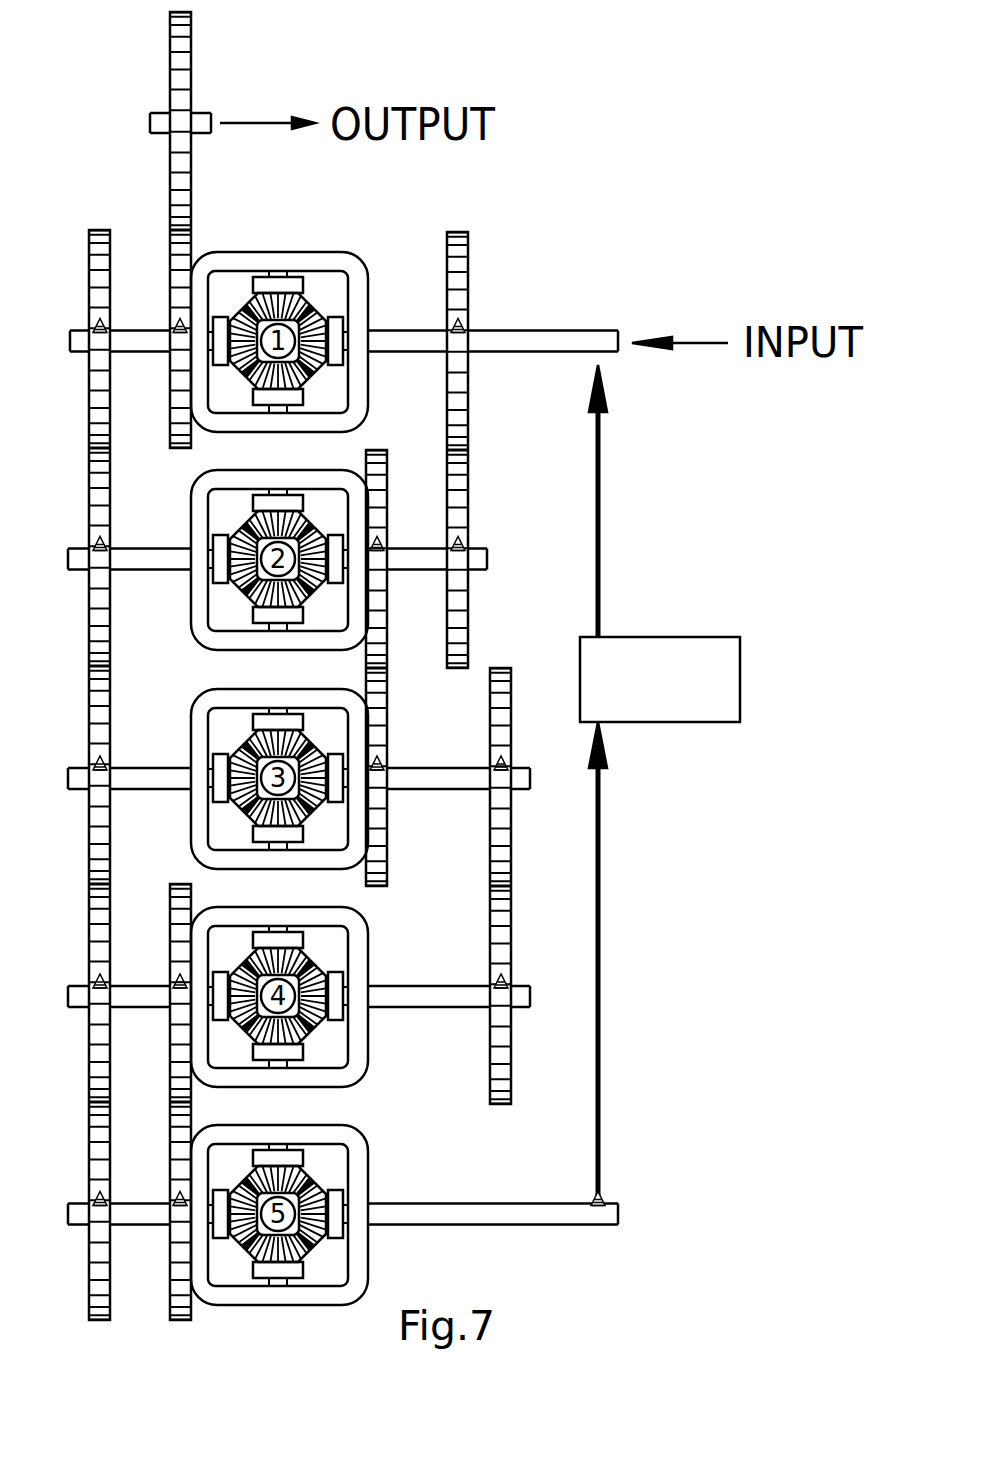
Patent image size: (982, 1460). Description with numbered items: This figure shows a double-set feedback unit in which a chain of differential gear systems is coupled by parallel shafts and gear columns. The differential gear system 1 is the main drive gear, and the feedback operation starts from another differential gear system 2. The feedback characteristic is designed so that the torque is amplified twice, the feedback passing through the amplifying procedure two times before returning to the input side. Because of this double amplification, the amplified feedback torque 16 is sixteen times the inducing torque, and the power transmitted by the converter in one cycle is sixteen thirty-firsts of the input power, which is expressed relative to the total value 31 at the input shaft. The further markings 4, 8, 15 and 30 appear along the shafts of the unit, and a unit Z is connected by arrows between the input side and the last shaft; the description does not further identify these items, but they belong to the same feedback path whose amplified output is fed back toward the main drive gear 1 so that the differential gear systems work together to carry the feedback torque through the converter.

The output shaft with output gear train 15 is at (149, 666).
The input gear 30 is at (430, 450).
The total power value 31 is at (357, 323).
The differential gear system 1 is at (277, 542).
The differential gear system 2 is at (287, 669).
The shaft of rotary unit 4 (ratio 4) 4 is at (296, 886).
The shaft of rotary unit 5 (ratio 8) 8 is at (332, 1102).
The amplified feedback torque value 16 is at (580, 964).
The control unit Z is at (680, 722).